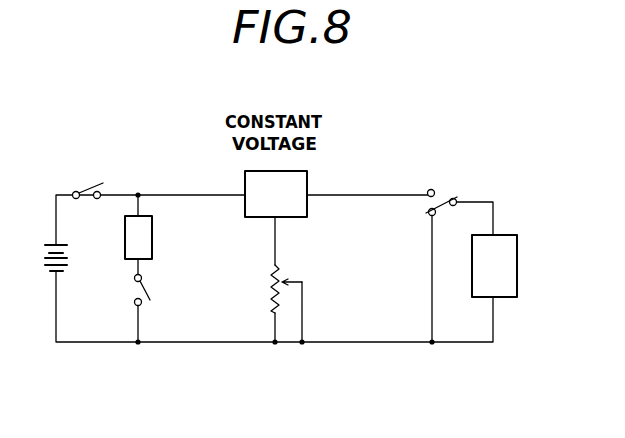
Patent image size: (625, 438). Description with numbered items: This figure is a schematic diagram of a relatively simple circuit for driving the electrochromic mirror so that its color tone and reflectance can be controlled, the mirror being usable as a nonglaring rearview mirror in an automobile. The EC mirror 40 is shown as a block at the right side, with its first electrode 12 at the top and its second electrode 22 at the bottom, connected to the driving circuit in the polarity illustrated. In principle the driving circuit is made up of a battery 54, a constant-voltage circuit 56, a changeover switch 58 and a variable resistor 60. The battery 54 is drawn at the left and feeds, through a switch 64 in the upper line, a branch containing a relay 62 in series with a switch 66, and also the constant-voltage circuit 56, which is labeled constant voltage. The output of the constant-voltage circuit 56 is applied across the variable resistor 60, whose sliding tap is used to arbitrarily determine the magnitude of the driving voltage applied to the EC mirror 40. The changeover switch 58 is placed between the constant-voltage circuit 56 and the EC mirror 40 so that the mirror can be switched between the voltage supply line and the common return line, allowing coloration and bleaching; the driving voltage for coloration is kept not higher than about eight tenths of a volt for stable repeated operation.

The battery 54 is at (45, 265).
The switch 64 is at (83, 180).
The relay 62 is at (143, 238).
The switch 66 is at (145, 293).
The constant-voltage circuit 56 is at (295, 187).
The variable resistor 60 is at (272, 300).
The changeover switch 58 is at (443, 194).
The EC mirror 40 is at (518, 258).
The first electrode 12 is at (503, 230).
The second electrode 22 is at (503, 302).